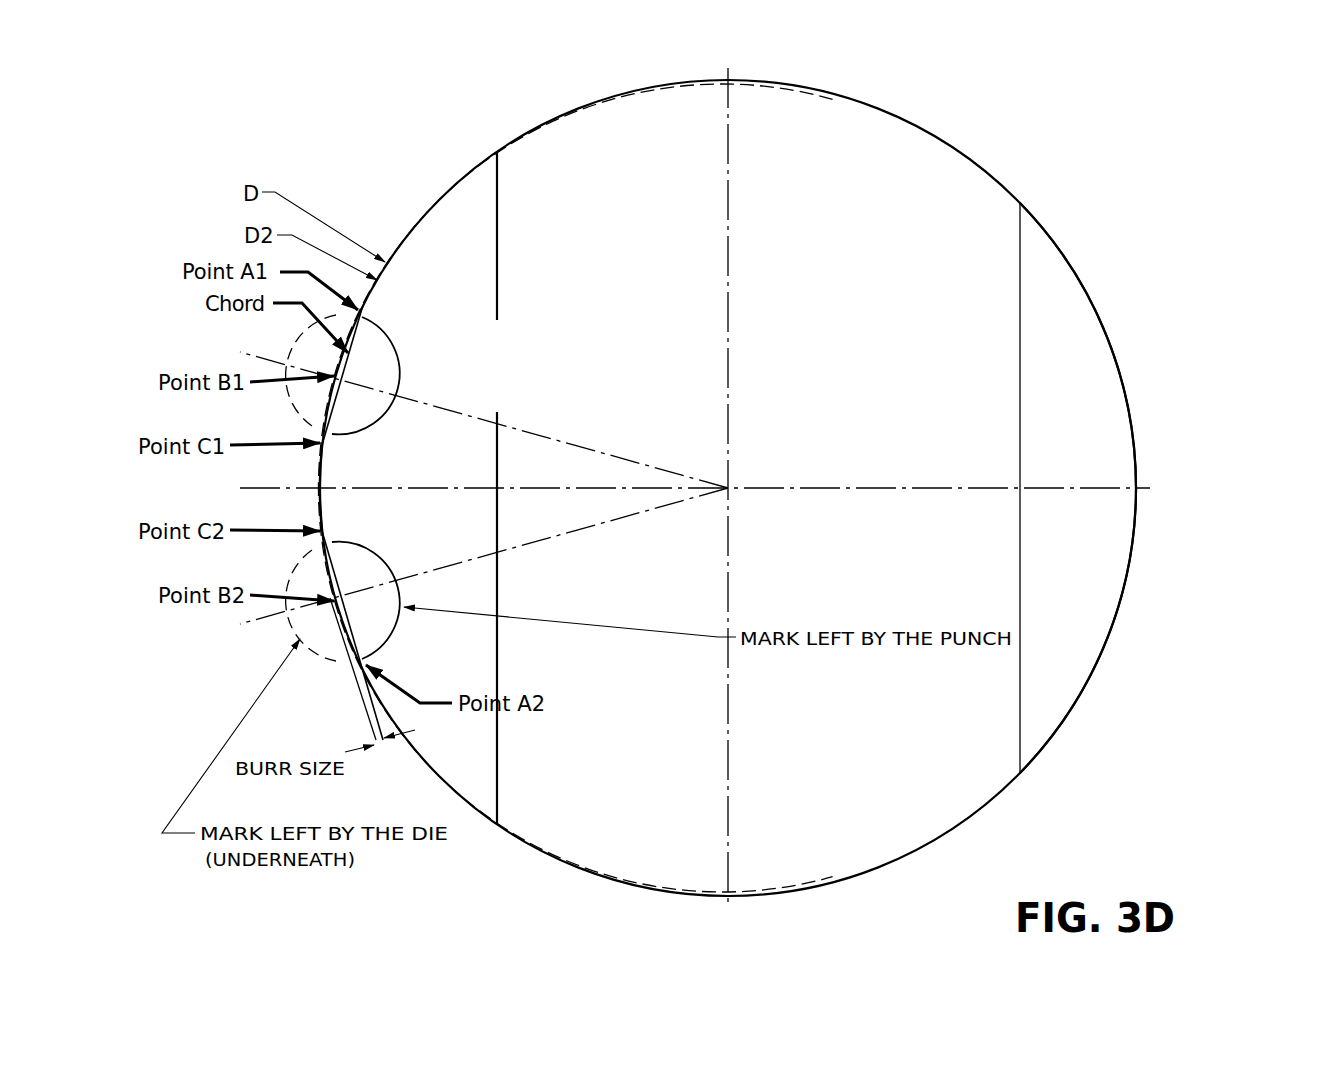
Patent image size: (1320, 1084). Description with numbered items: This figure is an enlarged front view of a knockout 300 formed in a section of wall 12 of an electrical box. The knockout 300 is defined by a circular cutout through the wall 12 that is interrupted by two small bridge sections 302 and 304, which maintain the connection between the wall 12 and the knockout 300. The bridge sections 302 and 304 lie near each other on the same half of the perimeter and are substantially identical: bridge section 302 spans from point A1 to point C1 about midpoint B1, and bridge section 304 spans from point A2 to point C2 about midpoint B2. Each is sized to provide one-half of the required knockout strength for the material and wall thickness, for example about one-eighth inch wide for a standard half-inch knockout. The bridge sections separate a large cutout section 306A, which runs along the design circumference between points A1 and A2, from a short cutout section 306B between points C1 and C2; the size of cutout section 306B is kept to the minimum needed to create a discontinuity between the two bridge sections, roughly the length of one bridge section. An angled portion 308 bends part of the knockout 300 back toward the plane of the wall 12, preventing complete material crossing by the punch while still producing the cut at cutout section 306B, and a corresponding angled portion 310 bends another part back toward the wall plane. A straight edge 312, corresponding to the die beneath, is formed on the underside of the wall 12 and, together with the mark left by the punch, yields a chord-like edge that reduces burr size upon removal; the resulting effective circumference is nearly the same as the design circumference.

The wall 12 is at (988, 122).
The knockout 300 is at (990, 792).
The bridge section 302 is at (457, 375).
The bridge section 304 is at (509, 592).
The cutout section 306A is at (1142, 488).
The cutout section 306B is at (404, 479).
The angled portion 308 is at (492, 142).
The angled portion 310 is at (1137, 184).
The straight edge 312 is at (257, 488).